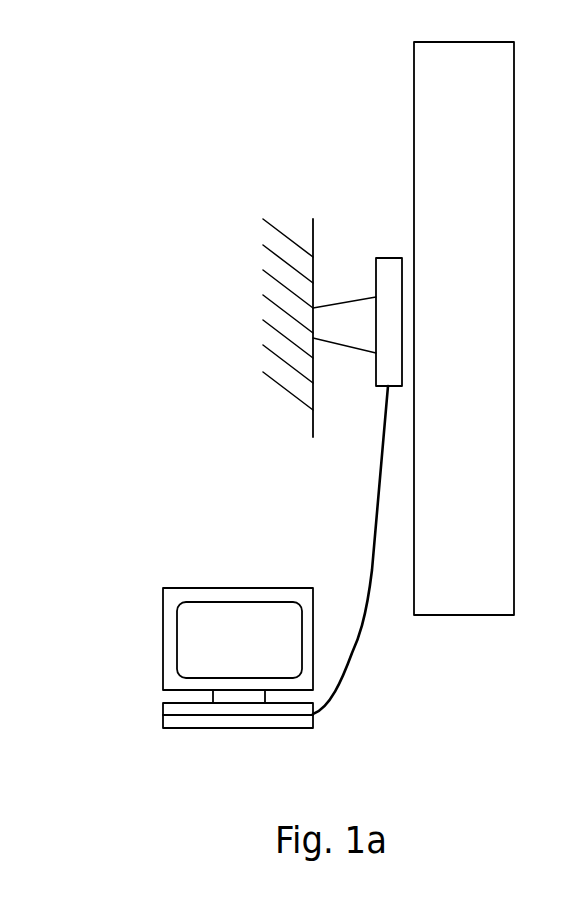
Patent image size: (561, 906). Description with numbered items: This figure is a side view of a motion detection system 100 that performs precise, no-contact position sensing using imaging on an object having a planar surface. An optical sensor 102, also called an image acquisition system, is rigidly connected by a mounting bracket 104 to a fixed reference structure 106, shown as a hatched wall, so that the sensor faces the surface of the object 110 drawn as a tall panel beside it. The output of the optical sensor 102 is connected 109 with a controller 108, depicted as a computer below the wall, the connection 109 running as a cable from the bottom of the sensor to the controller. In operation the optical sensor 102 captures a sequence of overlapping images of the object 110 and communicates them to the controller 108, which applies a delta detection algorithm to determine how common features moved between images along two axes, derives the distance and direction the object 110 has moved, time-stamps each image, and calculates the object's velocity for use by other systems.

The motion detection system 100 is at (286, 140).
The optical sensor 102 is at (388, 258).
The mounting bracket 104 is at (345, 303).
The fixed reference structure 106 is at (277, 385).
The controller 108 is at (238, 728).
The connection 109 is at (352, 653).
The object 110 is at (483, 130).